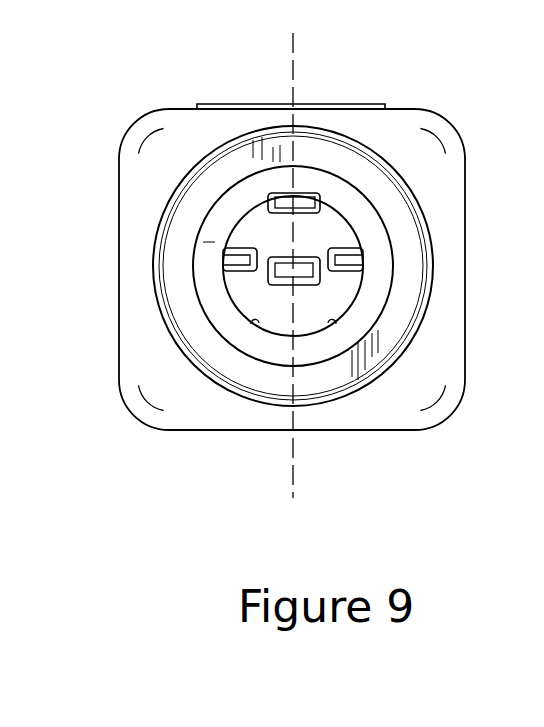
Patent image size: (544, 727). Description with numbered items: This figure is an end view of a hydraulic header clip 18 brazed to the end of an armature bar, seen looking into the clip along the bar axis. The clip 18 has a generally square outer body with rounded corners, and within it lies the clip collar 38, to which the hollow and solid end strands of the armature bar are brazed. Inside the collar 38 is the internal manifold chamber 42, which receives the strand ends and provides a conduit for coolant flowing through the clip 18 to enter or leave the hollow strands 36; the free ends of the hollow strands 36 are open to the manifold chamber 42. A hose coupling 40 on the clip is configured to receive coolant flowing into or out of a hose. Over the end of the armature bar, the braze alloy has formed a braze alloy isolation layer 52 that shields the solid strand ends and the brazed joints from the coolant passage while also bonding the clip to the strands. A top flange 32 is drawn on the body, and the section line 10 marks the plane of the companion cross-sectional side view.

The section line 10- 10 is at (293, 33).
The hydraulic header clip 18 is at (417, 430).
The mounting flange 32 is at (227, 104).
The hollow strands 36 is at (305, 267).
The clip collar 38 is at (457, 385).
The hose coupling 40 is at (433, 258).
The manifold chamber 42 is at (258, 220).
The braze alloy isolation layer 52 is at (272, 300).